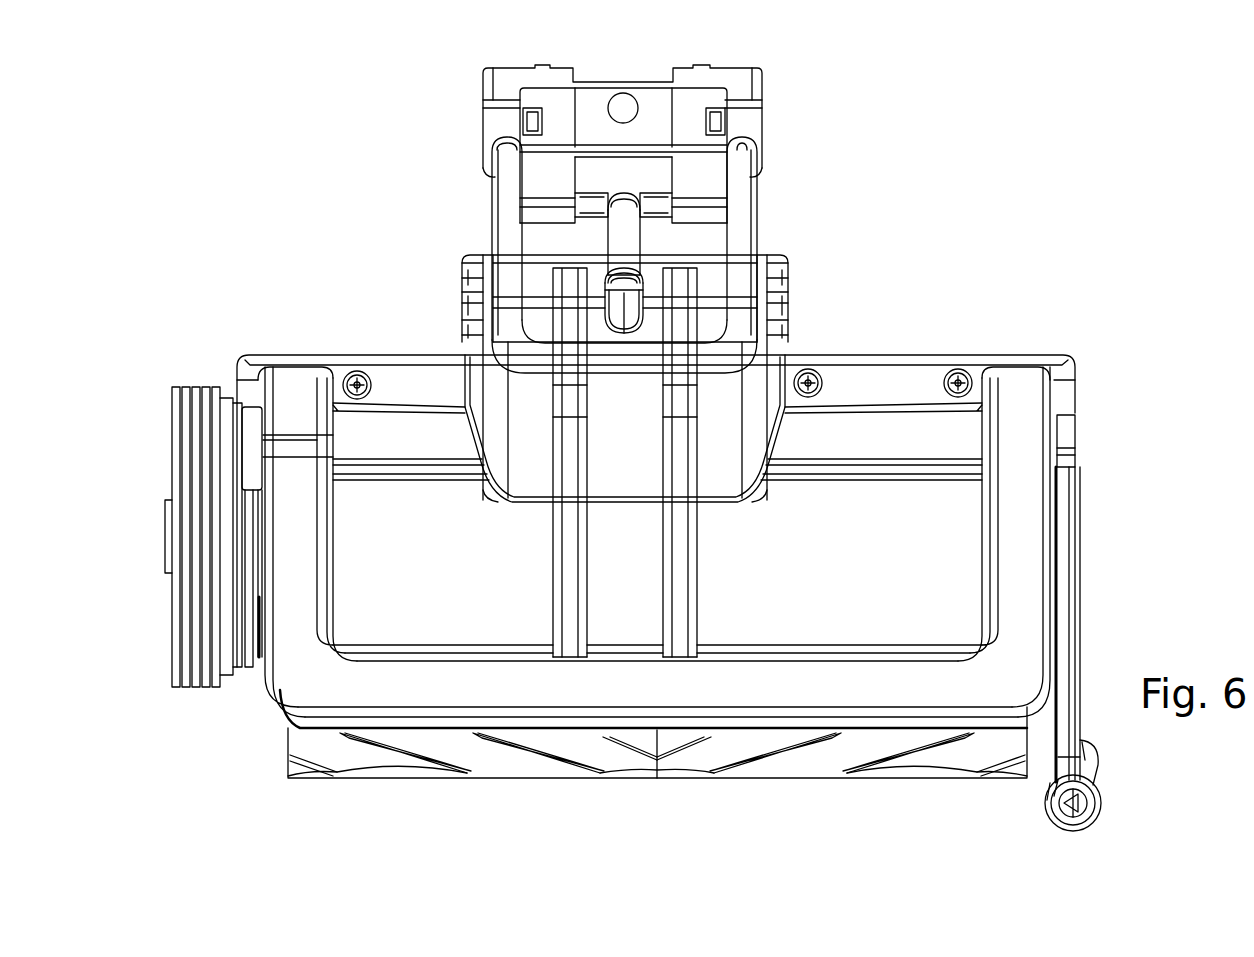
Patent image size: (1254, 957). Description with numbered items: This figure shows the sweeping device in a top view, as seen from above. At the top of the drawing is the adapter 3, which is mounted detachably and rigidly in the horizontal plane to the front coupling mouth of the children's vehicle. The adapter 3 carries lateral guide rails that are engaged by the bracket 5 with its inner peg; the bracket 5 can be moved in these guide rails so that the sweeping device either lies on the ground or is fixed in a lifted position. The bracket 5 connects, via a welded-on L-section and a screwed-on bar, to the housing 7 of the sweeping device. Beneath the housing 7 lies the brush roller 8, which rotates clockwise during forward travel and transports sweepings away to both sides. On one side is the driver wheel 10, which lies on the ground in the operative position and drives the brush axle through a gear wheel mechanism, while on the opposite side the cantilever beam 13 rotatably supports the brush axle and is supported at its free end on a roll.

The adapter 3 is at (594, 93).
The bracket 5 is at (743, 215).
The housing 7 is at (922, 370).
The brush roller 8 is at (935, 765).
The driver wheel 10 is at (195, 583).
The cantilever beam 13 is at (1065, 535).